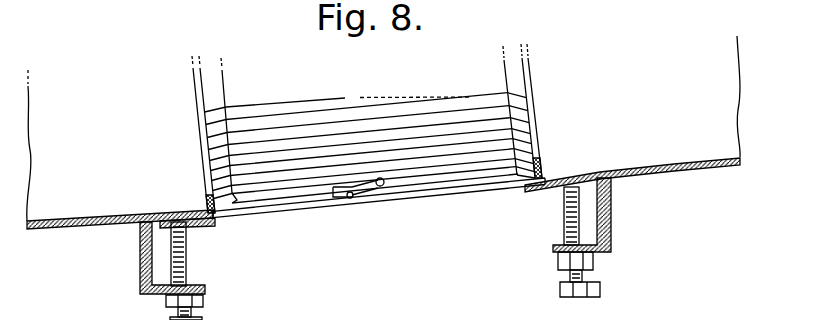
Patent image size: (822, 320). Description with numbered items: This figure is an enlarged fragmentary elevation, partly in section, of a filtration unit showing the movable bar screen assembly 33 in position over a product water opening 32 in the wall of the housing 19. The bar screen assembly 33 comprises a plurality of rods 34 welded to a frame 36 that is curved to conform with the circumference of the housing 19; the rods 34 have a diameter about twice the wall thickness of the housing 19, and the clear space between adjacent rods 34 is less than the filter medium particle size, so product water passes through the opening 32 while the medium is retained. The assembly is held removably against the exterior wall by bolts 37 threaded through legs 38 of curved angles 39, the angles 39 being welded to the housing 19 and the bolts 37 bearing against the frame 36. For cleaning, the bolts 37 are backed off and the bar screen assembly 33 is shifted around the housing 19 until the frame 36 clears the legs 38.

The housing 19 is at (696, 166).
The product water opening 32 is at (535, 124).
The bar screen assembly 33 is at (301, 62).
The rod 34 is at (308, 170).
The frame 36 is at (212, 216).
The bolt 37 is at (189, 263).
The leg 38 is at (200, 287).
The curved angle 39 is at (140, 250).